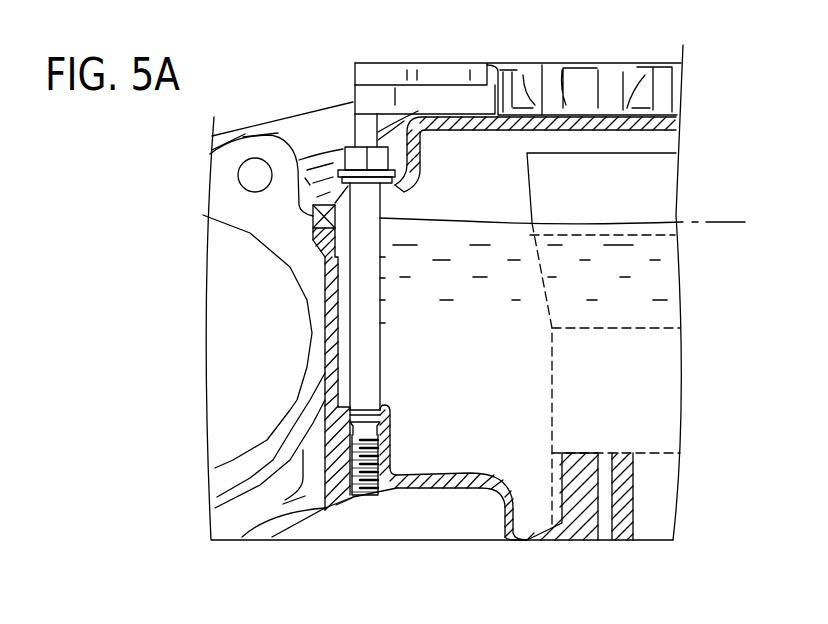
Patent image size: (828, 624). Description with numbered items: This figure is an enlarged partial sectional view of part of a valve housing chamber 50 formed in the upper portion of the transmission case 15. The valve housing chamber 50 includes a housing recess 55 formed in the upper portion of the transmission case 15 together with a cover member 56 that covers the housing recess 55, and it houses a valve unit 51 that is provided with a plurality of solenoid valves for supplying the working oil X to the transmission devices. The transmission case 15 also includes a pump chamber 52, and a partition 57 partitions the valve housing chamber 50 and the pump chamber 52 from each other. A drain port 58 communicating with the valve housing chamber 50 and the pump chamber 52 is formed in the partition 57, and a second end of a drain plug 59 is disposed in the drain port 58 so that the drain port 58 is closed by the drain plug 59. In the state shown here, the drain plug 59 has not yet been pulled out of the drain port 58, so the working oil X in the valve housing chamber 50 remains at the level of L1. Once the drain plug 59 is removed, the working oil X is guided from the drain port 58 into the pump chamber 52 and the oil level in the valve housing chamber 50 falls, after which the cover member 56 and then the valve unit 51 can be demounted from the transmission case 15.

The transmission case 15 is at (310, 115).
The valve housing chamber 50 is at (613, 143).
The valve unit 51 is at (650, 192).
The pump chamber 52 is at (483, 522).
The housing recess 55 is at (330, 333).
The cover member 56 is at (542, 117).
The partition 57 is at (436, 481).
The drain port 58 is at (361, 500).
The drain plug 59 is at (368, 203).
The working oil X is at (464, 221).
The oil level L1 is at (735, 224).